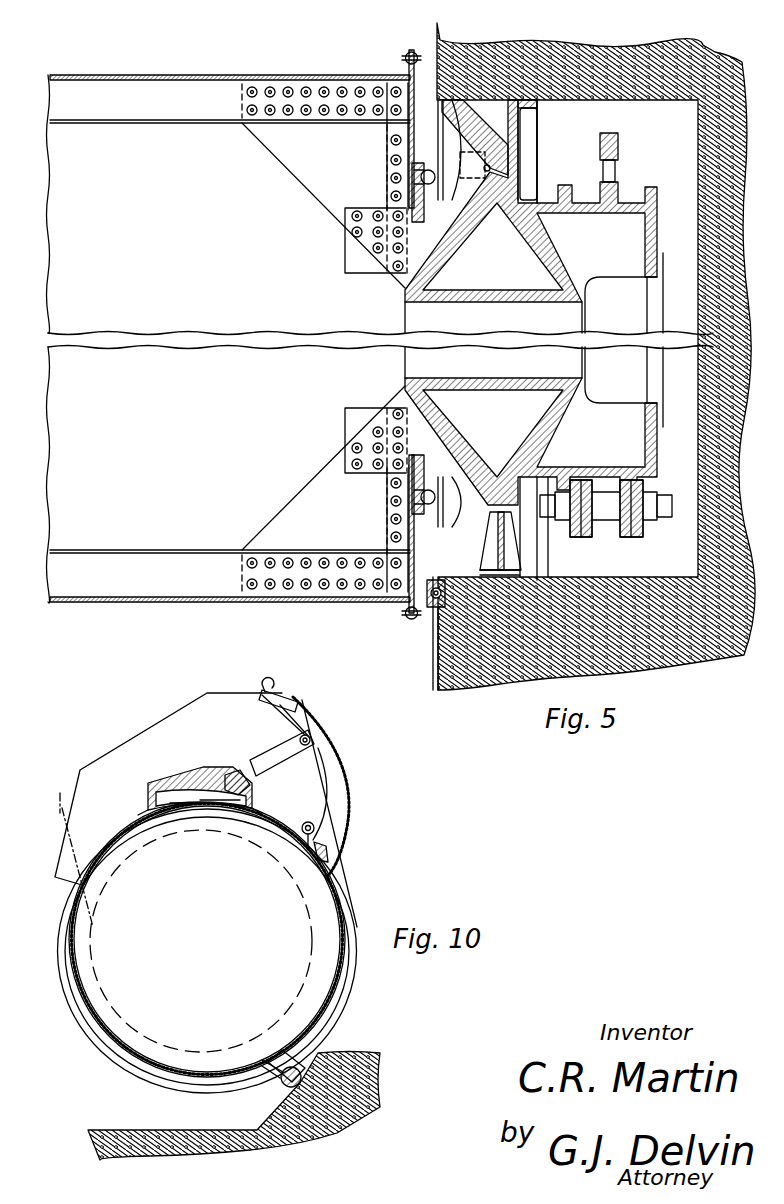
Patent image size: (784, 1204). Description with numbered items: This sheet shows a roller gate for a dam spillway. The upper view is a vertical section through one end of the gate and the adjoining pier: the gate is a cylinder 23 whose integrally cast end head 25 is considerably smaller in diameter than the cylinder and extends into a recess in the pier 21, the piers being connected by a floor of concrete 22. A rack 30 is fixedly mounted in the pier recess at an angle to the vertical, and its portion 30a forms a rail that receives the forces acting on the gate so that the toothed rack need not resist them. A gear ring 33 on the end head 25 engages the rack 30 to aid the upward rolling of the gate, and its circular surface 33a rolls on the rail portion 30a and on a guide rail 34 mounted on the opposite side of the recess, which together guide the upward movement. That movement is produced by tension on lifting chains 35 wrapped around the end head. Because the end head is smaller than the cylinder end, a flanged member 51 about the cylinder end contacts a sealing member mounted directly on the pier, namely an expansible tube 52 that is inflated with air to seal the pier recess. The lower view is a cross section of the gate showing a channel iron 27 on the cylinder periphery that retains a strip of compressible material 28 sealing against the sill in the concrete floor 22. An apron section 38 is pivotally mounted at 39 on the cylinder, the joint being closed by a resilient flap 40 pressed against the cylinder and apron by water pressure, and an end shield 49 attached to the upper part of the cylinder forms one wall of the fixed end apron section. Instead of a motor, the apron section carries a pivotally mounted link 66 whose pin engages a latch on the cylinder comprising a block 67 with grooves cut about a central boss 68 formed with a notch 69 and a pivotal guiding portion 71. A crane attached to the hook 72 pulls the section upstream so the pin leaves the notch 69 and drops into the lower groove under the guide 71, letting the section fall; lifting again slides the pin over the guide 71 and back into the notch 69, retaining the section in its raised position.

In FIG. 5, the piers 21 is at (462, 678).
In FIG. 10, the floor of concrete 22 is at (360, 1053).
In FIG. 5, the cylinder 23 is at (172, 602).
In FIG. 10, the cylinder 23 is at (84, 1010).
In FIG. 5, the end head 25 is at (498, 292).
In FIG. 10, the channel iron 27 is at (315, 1060).
In FIG. 10, the strip of compressible material 28 is at (284, 1088).
In FIG. 5, the rack 30 is at (462, 135).
In FIG. 10, the rack 30 is at (62, 808).
In FIG. 5, the rail portion of rack 30a is at (537, 145).
In FIG. 5, the gear ring 33 is at (462, 209).
In FIG. 5, the circular surface 33a is at (520, 180).
In FIG. 5, the guide rail 34 is at (484, 522).
In FIG. 5, the lifting chains 35 is at (636, 534).
In FIG. 10, the apron sections 38 is at (345, 765).
In FIG. 10, the pivot 39 is at (308, 822).
In FIG. 10, the flaps 40 is at (330, 850).
In FIG. 10, the end shield 49 is at (148, 735).
In FIG. 5, the flanged member 51 is at (416, 622).
In FIG. 5, the expansible tube 52 is at (436, 580).
In FIG. 10, the link 66 is at (260, 758).
In FIG. 10, the latch block 67 is at (176, 782).
In FIG. 10, the central boss 68 is at (224, 800).
In FIG. 10, the notch 69 is at (236, 772).
In FIG. 10, the pivotal guiding portion 71 is at (196, 800).
In FIG. 10, the hook 72 is at (276, 684).